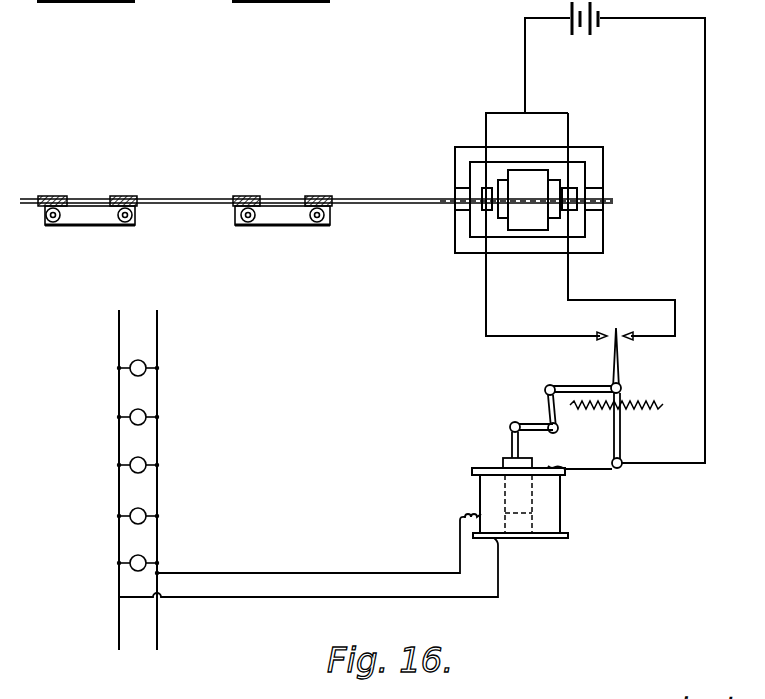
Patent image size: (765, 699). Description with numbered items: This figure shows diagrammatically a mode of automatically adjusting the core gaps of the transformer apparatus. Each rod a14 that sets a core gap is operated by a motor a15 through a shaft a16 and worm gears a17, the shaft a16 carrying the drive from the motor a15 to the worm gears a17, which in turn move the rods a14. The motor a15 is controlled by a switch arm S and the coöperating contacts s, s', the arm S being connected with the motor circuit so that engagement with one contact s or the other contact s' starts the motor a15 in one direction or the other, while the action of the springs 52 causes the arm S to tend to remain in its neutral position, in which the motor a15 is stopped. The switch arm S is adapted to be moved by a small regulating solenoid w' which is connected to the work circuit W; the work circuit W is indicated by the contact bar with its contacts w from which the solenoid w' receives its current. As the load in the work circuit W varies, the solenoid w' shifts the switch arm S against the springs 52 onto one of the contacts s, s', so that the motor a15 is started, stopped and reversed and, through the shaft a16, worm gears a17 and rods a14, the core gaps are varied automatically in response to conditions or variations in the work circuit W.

The rod a14 is at (58, 222).
The motor a15 is at (523, 178).
The shaft a16 is at (403, 184).
The worm gears a17 is at (130, 197).
The contact s is at (579, 322).
The contact s' is at (641, 322).
The switch arm S is at (622, 431).
The spring 52 is at (616, 418).
The contact pin w is at (155, 467).
The work circuit W is at (123, 502).
The solenoid w' is at (538, 503).